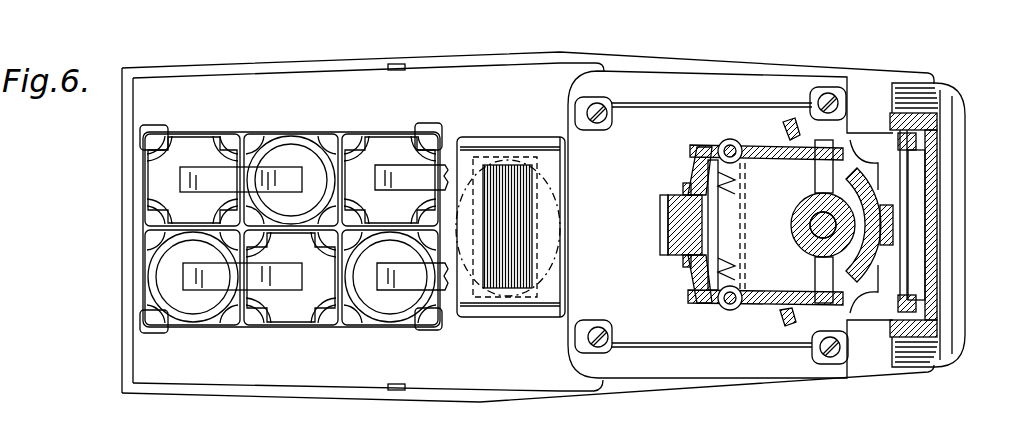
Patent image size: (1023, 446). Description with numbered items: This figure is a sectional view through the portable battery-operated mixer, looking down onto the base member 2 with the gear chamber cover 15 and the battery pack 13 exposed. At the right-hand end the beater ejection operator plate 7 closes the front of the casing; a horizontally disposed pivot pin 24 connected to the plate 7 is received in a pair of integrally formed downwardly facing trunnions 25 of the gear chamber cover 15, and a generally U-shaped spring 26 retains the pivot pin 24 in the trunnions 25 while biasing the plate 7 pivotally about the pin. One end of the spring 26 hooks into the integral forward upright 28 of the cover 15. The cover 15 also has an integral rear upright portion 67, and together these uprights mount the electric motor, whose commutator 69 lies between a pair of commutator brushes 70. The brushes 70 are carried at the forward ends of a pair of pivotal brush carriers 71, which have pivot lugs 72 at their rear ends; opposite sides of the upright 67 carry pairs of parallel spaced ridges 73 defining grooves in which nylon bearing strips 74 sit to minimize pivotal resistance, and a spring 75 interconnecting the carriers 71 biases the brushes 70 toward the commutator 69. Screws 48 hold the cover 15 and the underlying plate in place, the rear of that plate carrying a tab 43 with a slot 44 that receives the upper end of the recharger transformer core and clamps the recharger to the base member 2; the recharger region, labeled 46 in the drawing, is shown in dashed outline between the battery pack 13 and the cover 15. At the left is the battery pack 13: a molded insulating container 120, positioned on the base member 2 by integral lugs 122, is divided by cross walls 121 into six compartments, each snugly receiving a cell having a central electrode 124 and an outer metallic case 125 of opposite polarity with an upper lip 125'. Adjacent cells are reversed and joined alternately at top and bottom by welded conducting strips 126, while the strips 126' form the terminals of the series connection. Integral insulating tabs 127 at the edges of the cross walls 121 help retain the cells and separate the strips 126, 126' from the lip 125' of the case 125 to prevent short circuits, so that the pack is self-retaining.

The base member 2 is at (153, 396).
The beater ejection operator plate 7 is at (962, 101).
The battery pack 13 is at (312, 331).
The gear chamber cover 15 is at (750, 88).
The pivot pin 24 is at (903, 166).
The trunnions 25 is at (916, 143).
The spring 26 is at (913, 219).
The forward upright 28 is at (870, 190).
The tab 43 is at (533, 140).
The slot 44 is at (520, 205).
The casing 46 is at (498, 160).
The screws 48 is at (603, 110).
The rear upright portion 67 is at (685, 218).
The commutator 69 is at (812, 205).
The commutator brushes 70 is at (832, 146).
The brush carriers 71 is at (768, 150).
The pivot lugs 72 is at (697, 172).
The ridges 73 is at (689, 184).
The bearing strips 74 is at (685, 193).
The spring 75 is at (735, 275).
The container 120 is at (215, 132).
The cross walls 121 is at (322, 138).
The lugs 122 is at (152, 129).
The central electrode 124 is at (310, 289).
The outer metallic case 125 is at (291, 157).
The upper lip 125' is at (390, 157).
The conducting strips 126 is at (241, 236).
The conducting strips 126' is at (431, 233).
The insulating tabs 127 is at (387, 137).